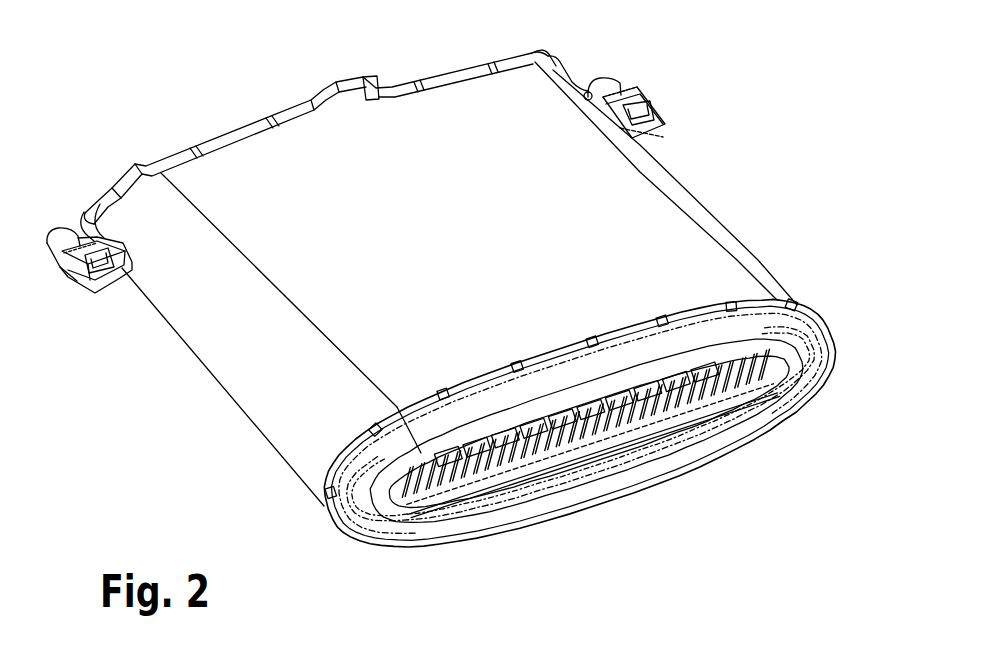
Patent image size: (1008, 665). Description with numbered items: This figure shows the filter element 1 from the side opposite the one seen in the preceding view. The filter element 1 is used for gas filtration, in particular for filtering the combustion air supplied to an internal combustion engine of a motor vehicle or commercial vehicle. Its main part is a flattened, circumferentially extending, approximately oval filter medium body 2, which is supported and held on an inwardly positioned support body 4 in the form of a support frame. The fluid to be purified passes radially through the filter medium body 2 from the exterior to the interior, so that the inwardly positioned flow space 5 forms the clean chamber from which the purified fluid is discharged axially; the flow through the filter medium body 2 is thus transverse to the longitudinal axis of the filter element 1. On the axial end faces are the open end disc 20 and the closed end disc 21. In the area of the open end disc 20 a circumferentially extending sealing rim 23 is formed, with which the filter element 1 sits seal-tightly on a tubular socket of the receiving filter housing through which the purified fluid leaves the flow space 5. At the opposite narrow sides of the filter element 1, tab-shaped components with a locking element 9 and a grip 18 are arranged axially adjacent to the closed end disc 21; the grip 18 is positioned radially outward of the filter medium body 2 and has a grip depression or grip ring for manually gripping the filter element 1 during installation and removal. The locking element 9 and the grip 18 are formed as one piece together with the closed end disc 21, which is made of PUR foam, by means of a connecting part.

The filter element 1 is at (181, 108).
The filter medium body 2 is at (658, 221).
The support body 4 is at (522, 462).
The flow space 5 is at (595, 462).
The locking element 9 is at (98, 263).
The grip 18 is at (58, 234).
The open end disc 20 is at (807, 327).
The closed end disc 21 is at (477, 65).
The sealing rim 23 is at (710, 453).